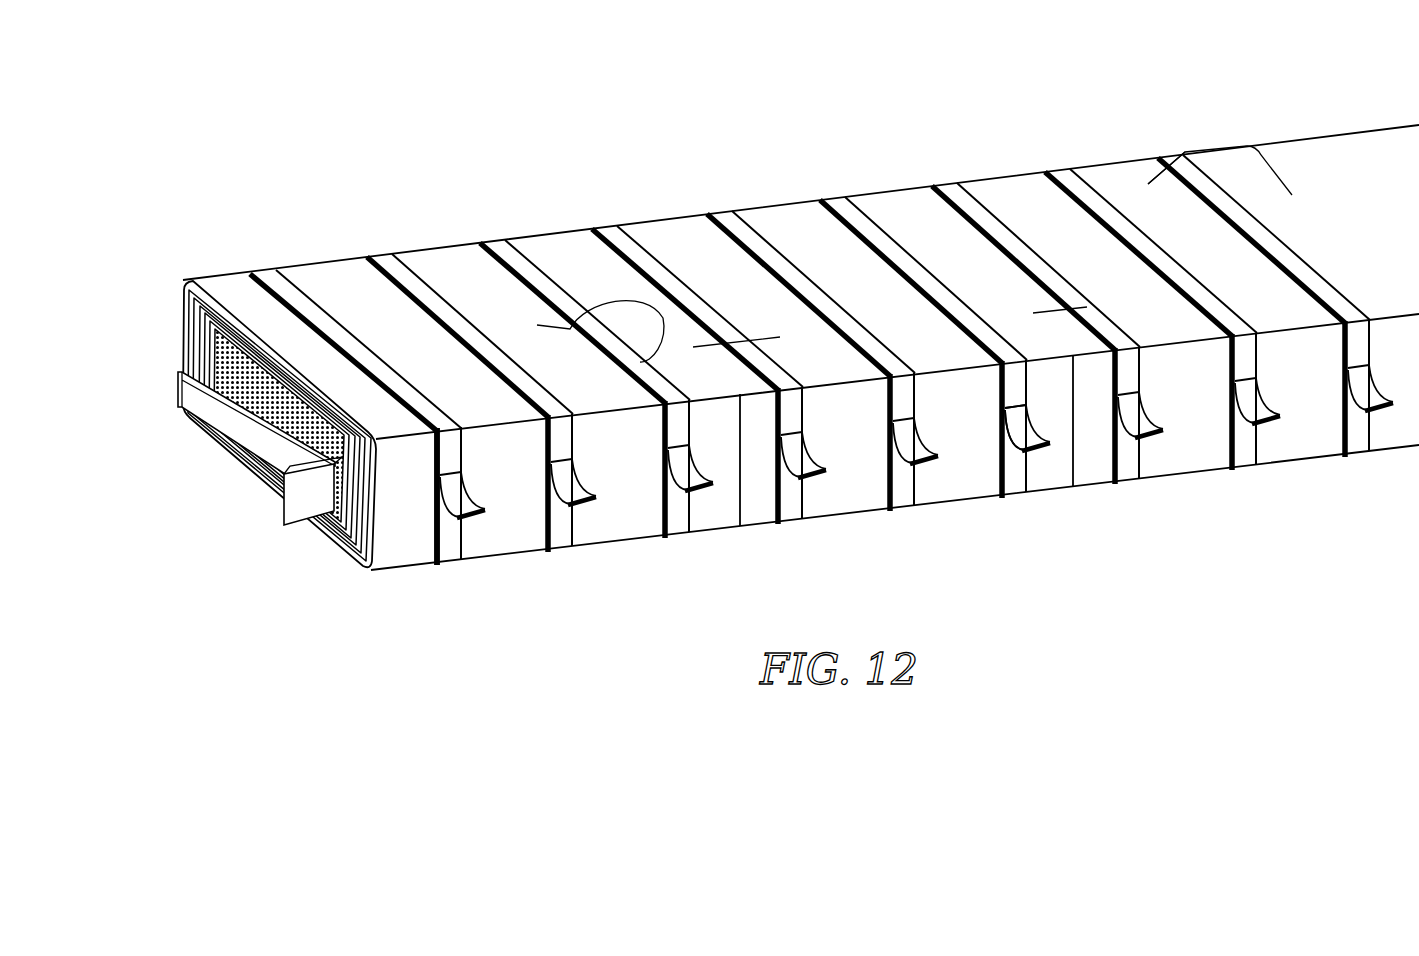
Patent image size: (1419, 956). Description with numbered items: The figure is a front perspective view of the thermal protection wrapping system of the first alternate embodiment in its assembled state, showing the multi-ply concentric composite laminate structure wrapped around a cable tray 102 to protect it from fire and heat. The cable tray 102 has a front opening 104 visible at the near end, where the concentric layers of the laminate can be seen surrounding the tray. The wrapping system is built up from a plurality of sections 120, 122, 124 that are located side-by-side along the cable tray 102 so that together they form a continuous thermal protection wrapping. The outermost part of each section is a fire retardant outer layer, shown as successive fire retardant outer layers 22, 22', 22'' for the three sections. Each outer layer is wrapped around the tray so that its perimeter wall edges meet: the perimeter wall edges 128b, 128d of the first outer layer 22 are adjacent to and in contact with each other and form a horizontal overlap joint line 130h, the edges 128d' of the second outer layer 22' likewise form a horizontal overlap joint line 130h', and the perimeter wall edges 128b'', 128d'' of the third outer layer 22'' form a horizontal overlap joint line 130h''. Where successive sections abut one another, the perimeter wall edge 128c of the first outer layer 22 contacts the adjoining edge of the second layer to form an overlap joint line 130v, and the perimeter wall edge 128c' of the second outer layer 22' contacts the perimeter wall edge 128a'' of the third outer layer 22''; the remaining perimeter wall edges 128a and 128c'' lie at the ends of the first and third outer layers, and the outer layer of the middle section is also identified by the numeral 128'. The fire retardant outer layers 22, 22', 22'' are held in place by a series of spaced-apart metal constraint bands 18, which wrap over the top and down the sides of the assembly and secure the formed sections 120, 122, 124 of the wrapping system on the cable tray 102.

The section 120 is at (547, 218).
The section 122 is at (890, 173).
The section 124 is at (1237, 153).
The fire retardant outer layer 22 is at (327, 428).
The fire retardant outer layer 22' is at (730, 376).
The fire retardant outer layer 22'' is at (1184, 322).
The metal constraint band 18 is at (585, 492).
The cable tray 102 is at (300, 507).
The front opening 104 is at (278, 436).
The perimeter wall edge 128a is at (681, 290).
The perimeter wall edge 128b is at (435, 387).
The perimeter wall edge 128c is at (585, 321).
The perimeter wall edge 128d is at (469, 335).
The strap 128' is at (923, 280).
The perimeter wall edge 128d' is at (821, 382).
The perimeter wall edge 128c' is at (1090, 383).
The perimeter wall edge 128a'' is at (1022, 245).
The perimeter wall edge 128b'' is at (1151, 224).
The perimeter wall edge 128c'' is at (1284, 239).
The perimeter wall edge 128d'' is at (1064, 344).
The horizontal overlap joint line 130h is at (355, 325).
The overlap joint line 130v is at (1017, 163).
The horizontal overlap joint line 130h' is at (1074, 441).
The horizontal overlap joint line 130h'' is at (1263, 166).